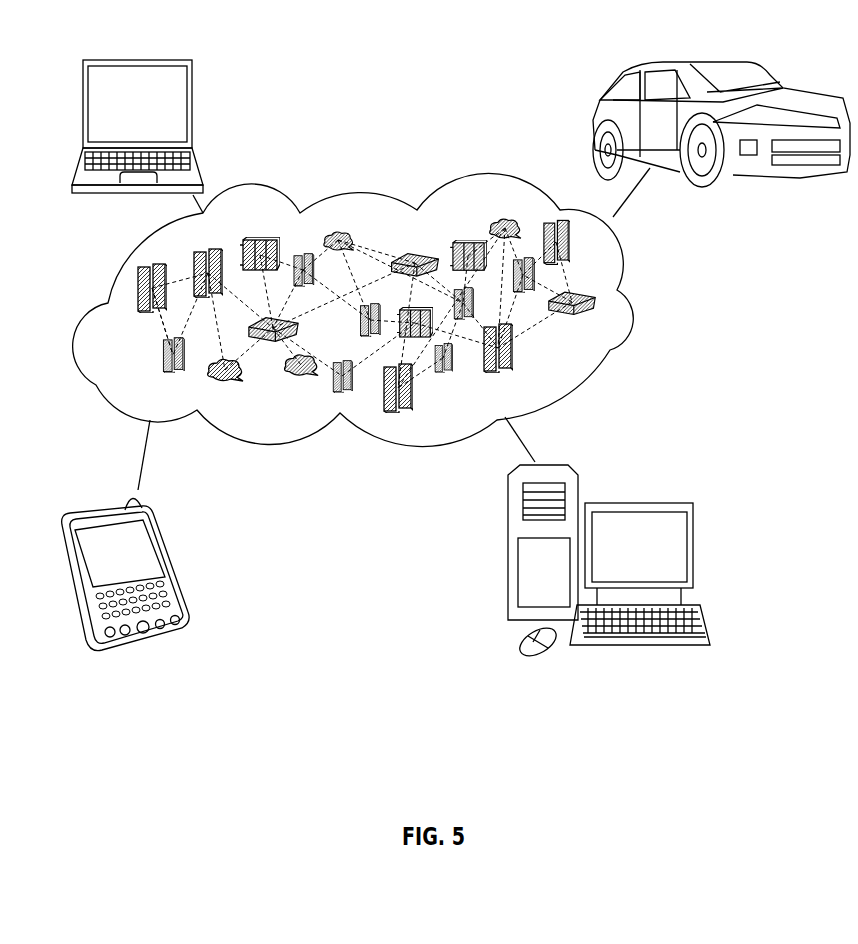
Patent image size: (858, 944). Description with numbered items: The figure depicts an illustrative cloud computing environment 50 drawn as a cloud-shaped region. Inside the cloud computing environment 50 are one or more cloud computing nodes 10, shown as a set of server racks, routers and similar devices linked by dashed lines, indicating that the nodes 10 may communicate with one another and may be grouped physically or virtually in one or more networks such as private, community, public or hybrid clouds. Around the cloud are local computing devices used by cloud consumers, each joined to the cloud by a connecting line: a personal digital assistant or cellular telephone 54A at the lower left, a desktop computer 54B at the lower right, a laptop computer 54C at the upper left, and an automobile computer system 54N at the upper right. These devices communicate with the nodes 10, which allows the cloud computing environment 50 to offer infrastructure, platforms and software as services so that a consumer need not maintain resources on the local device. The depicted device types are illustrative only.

The cloud computing nodes 10 is at (612, 335).
The cloud computing environment 50 is at (655, 248).
The personal digital assistant or cellular telephone 54A is at (163, 547).
The desktop computer 54B is at (693, 547).
The laptop computer 54C is at (192, 107).
The automobile computer system 54N is at (753, 78).